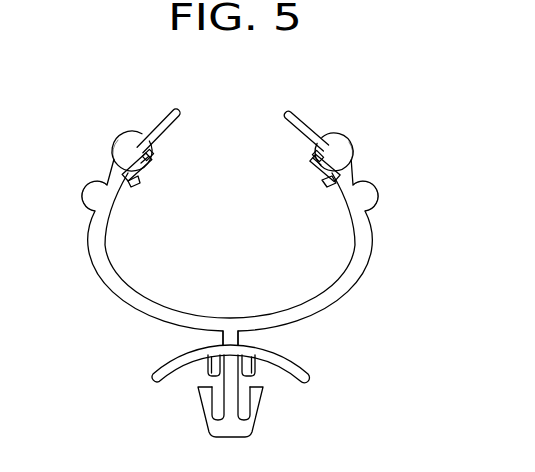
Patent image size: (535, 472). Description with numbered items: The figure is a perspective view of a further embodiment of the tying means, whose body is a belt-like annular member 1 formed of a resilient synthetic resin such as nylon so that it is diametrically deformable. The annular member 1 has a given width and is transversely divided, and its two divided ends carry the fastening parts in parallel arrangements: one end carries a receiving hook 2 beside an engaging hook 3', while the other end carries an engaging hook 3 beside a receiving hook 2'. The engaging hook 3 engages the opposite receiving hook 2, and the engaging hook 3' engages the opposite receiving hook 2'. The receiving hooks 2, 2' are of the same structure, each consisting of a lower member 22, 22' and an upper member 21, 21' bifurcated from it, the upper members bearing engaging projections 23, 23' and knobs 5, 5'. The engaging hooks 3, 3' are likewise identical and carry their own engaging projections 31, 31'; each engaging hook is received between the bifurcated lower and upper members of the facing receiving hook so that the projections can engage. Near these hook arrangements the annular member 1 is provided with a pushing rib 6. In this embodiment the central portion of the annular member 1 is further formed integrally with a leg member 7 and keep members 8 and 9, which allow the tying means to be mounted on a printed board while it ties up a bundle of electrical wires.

The annular member 1 is at (127, 292).
The receiving hook 2 is at (120, 132).
The receiving hook 2' is at (343, 124).
The upper member 21 is at (90, 137).
The upper member 21' is at (380, 134).
The lower member 22 is at (143, 208).
The lower member 22' is at (317, 209).
The engaging projection 23 is at (181, 158).
The engaging projection 23' is at (285, 159).
The engaging hook 3 is at (316, 187).
The engaging hook 3' is at (156, 187).
The engaging projection 31 is at (295, 178).
The engaging projection 31' is at (173, 176).
The knob 5 is at (158, 111).
The knob 5' is at (306, 104).
The pushing rib 6 is at (92, 192).
The leg member 7 is at (262, 338).
The keep member 8 is at (165, 362).
The keep member 9 is at (203, 403).